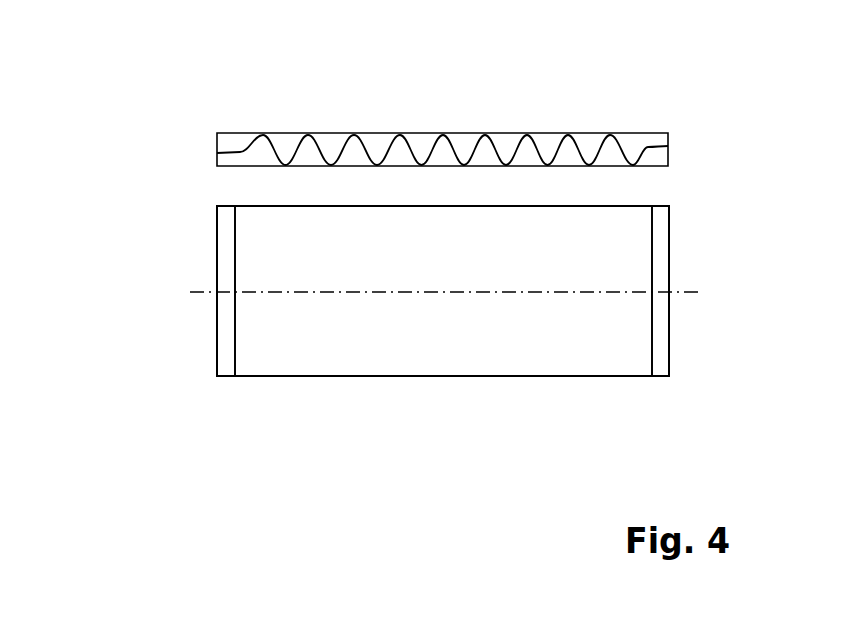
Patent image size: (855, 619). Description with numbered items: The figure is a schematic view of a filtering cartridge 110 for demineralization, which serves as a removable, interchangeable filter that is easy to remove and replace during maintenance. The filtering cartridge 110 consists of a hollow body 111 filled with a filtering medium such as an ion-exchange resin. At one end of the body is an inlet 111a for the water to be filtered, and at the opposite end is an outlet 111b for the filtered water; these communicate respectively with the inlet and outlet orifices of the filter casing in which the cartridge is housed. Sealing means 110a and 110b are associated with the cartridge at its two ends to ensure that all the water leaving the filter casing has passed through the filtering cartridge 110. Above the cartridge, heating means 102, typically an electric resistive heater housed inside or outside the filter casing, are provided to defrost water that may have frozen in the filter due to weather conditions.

The heating means 102 is at (435, 107).
The filtering cartridge 110 is at (475, 420).
The hollow body 111 is at (318, 357).
The inlet 111a is at (190, 250).
The outlet 111b is at (692, 255).
The sealing means 110a is at (223, 360).
The sealing means 110b is at (658, 362).